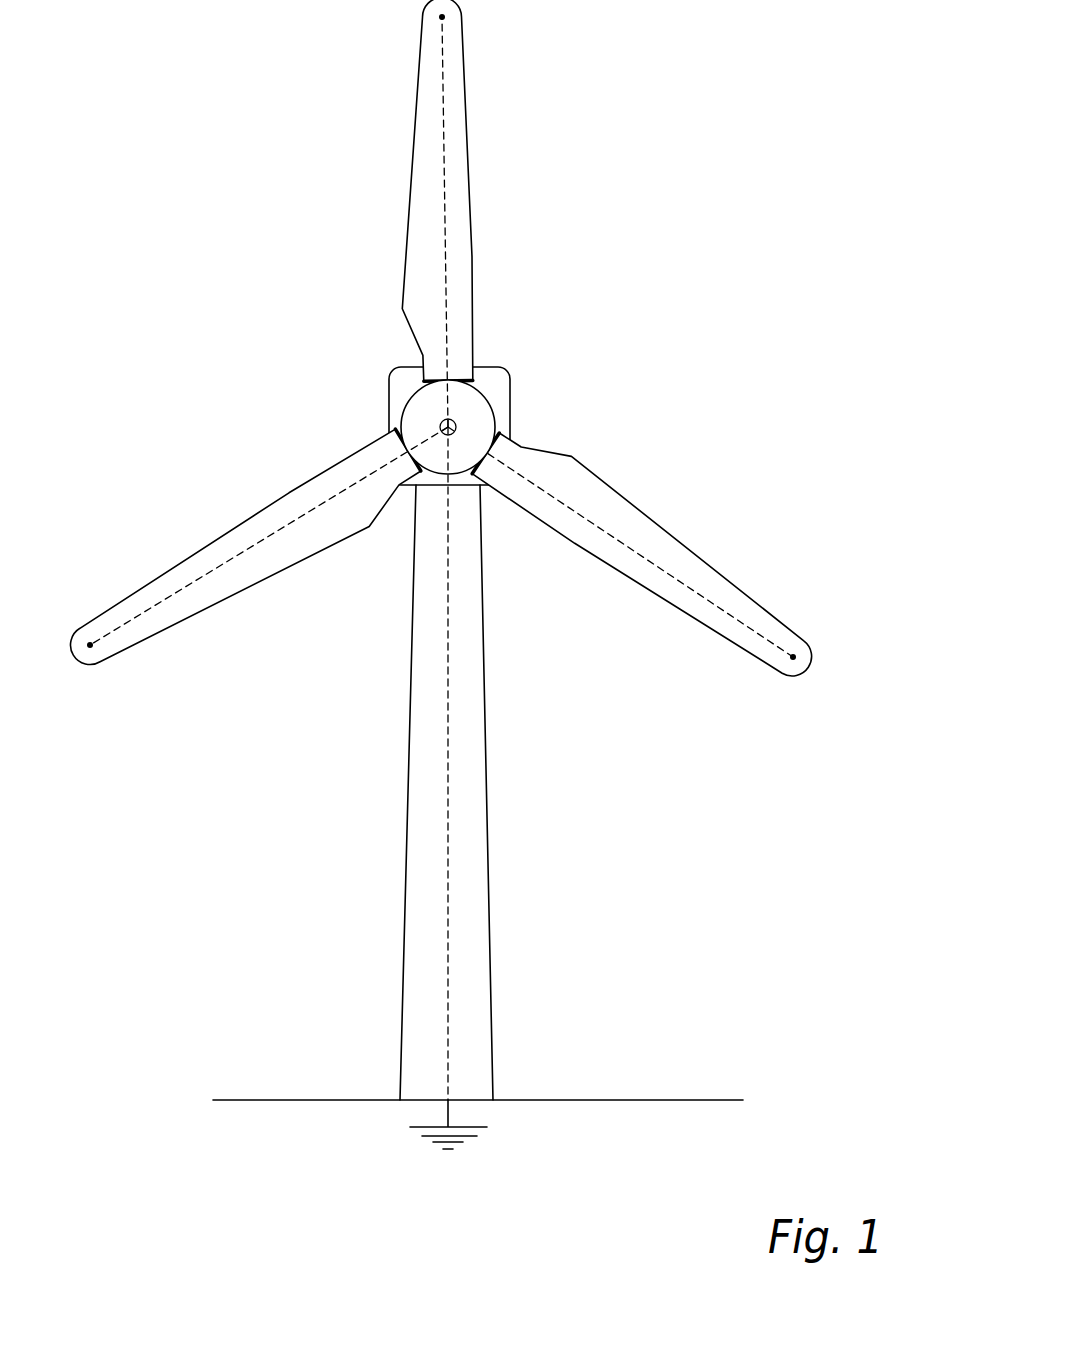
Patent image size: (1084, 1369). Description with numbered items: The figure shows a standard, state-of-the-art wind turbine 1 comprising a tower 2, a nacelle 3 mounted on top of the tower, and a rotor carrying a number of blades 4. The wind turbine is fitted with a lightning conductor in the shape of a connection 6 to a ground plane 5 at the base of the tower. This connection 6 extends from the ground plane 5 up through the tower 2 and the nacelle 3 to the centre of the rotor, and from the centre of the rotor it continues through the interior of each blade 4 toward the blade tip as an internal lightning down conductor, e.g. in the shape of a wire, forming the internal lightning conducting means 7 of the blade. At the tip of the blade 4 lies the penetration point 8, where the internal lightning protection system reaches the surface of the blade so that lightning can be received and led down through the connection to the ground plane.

The wind turbine 1 is at (501, 550).
The tower 2 is at (488, 782).
The nacelle 3 is at (505, 392).
The blade 4 is at (605, 497).
The ground plane 5 is at (472, 1148).
The connection 6 is at (448, 663).
The internal lightning conducting means 7 is at (707, 595).
The penetration point 8 is at (800, 652).